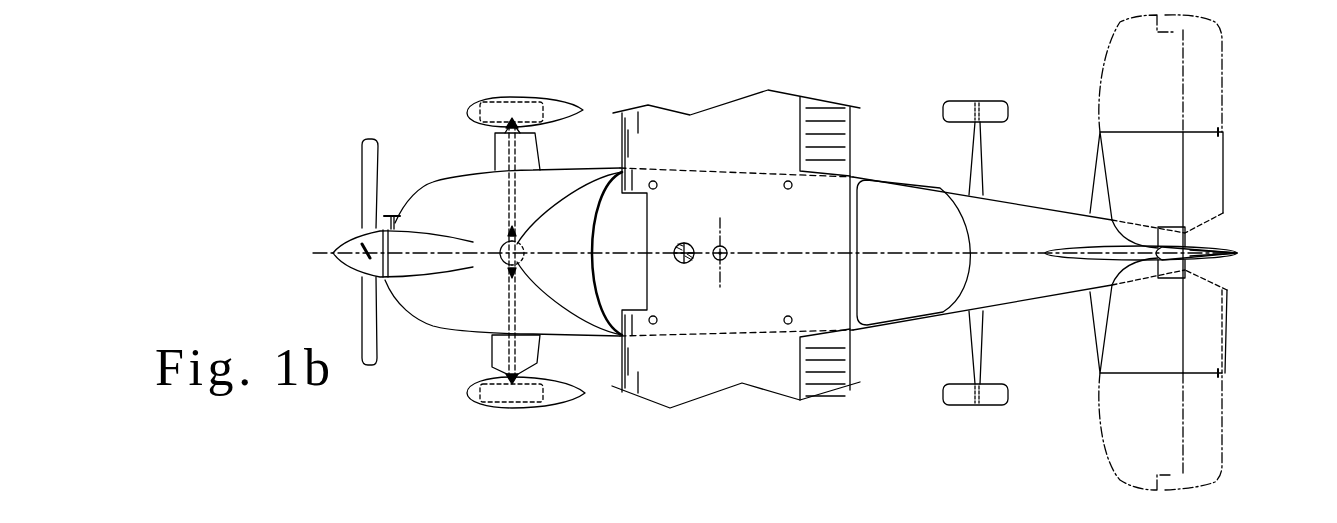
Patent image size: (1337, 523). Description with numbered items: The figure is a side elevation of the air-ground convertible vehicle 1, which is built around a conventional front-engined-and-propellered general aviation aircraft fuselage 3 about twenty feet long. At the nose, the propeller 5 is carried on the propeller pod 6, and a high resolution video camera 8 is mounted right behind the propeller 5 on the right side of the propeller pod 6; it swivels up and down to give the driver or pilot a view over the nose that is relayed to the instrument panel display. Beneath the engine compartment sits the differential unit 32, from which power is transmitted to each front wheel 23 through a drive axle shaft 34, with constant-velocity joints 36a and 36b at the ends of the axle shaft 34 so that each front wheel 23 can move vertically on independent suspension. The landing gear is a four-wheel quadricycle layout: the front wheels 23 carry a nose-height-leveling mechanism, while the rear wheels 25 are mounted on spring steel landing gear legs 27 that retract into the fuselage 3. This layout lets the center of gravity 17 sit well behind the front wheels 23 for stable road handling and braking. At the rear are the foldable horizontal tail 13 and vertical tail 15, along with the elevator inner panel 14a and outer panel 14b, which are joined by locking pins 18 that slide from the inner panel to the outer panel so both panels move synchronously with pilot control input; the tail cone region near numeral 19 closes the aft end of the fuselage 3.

The air-ground convertible vehicle 1 is at (428, 397).
The fuselage 3 is at (900, 337).
The propeller 5 is at (363, 185).
The propeller pod 6 is at (406, 281).
The video camera 8 is at (398, 222).
The horizontal tail 13 is at (1123, 357).
The elevator inner panel 14a is at (1230, 302).
The elevator outer panel 14b is at (1213, 433).
The vertical tail 15 is at (1085, 252).
The center of gravity 17 is at (684, 243).
The locking pins 18 is at (1222, 132).
The tail cone 19 is at (1218, 262).
The front wheel 23 is at (524, 408).
The rear wheel 25 is at (955, 406).
The landing gear leg 27 is at (980, 352).
The differential unit 32 is at (518, 240).
The drive axle shaft 34 is at (514, 160).
The constant-velocity joint 36a is at (517, 271).
The constant-velocity joint 36b is at (514, 378).